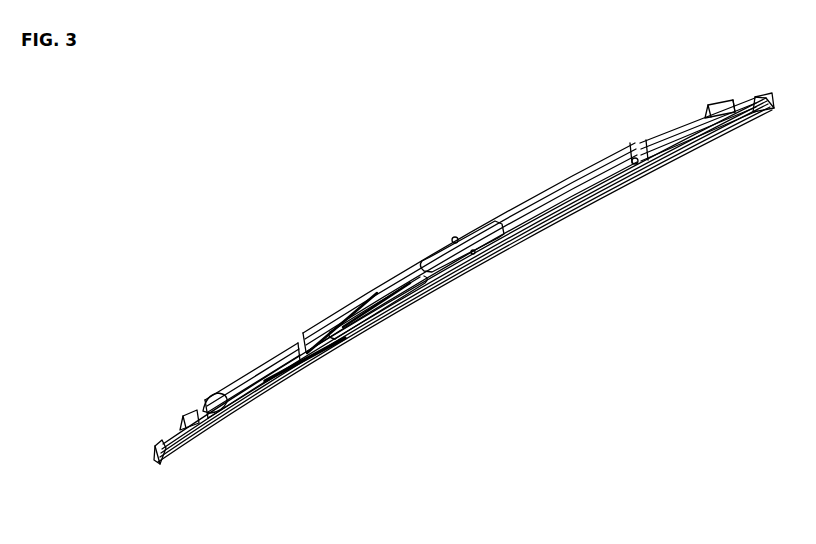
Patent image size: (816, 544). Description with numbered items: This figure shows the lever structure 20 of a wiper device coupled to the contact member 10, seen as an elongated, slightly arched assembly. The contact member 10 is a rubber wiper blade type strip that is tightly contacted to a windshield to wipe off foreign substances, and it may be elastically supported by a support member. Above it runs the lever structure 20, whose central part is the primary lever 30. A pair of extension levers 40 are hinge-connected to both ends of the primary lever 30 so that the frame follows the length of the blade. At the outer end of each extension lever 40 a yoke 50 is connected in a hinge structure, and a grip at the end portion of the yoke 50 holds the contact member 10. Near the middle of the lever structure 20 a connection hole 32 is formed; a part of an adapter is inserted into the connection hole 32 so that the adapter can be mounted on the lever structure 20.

The contact member 10 is at (204, 445).
The lever structure 20 is at (202, 241).
The primary lever 30 is at (307, 334).
The connection hole 32 is at (455, 238).
The extension lever 40 is at (243, 374).
The yoke 50 is at (175, 414).